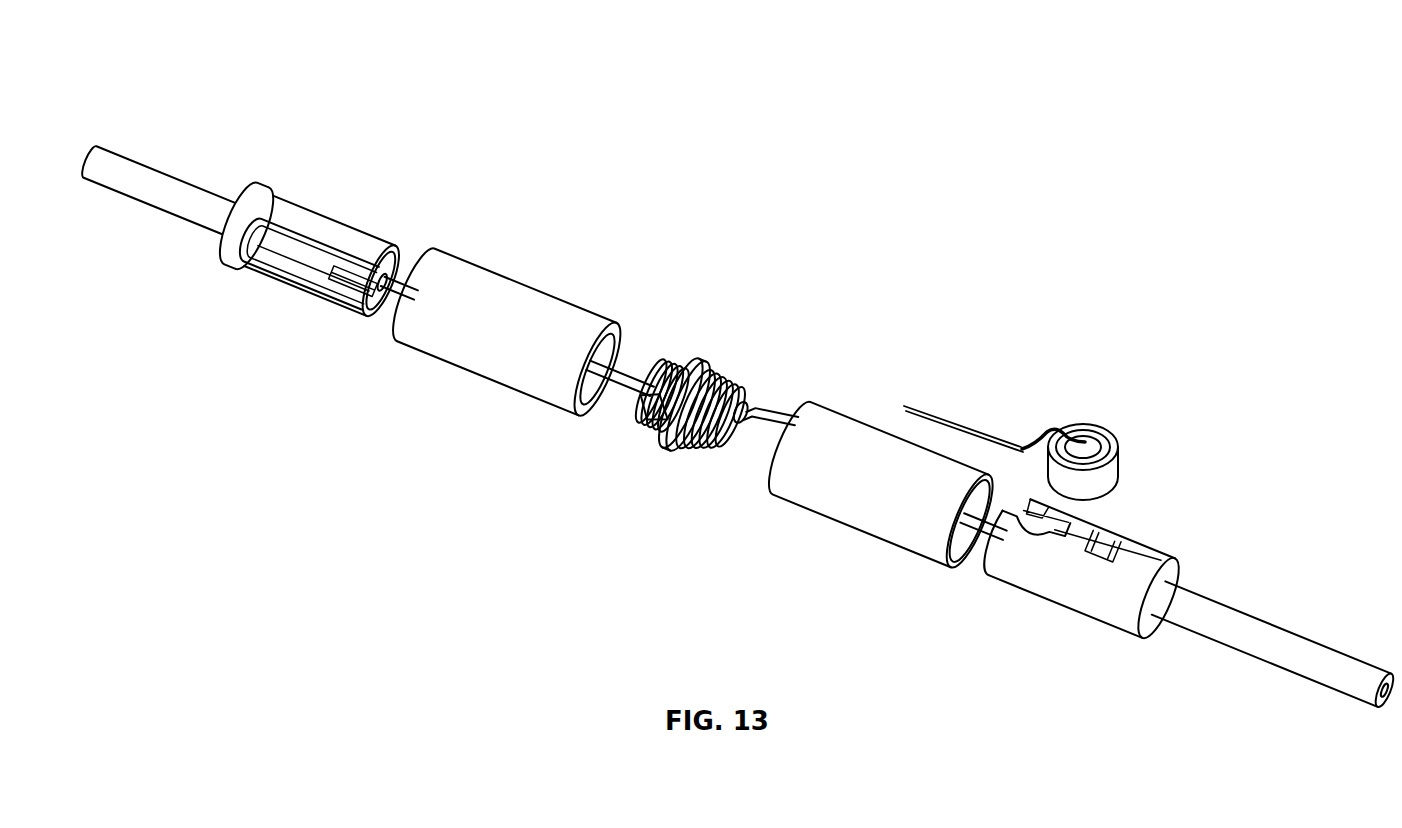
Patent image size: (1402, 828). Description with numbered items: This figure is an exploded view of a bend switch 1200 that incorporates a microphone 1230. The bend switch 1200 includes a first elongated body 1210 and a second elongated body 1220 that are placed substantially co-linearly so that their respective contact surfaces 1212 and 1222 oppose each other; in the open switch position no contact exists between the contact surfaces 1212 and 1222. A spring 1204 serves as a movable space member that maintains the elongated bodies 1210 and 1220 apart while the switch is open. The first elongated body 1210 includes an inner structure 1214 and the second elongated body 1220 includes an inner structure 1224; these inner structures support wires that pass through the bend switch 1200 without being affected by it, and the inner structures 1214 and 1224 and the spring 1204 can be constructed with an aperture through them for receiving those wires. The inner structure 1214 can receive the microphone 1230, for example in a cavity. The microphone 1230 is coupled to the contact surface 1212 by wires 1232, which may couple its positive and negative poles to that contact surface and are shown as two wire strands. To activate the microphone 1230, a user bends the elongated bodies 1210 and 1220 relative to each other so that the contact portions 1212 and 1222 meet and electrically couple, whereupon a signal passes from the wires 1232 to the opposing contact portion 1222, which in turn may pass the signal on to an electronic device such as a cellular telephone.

The bend switch 1200 is at (326, 34).
The spring 1204 is at (733, 384).
The first elongated body 1210 is at (867, 535).
The contact surface 1212 is at (687, 450).
The inner structure 1214 is at (1075, 608).
The second elongated body 1220 is at (490, 382).
The contact surface 1222 is at (660, 428).
The inner structure 1224 is at (234, 265).
The microphone 1230 is at (1110, 418).
The wires 1232 is at (912, 407).